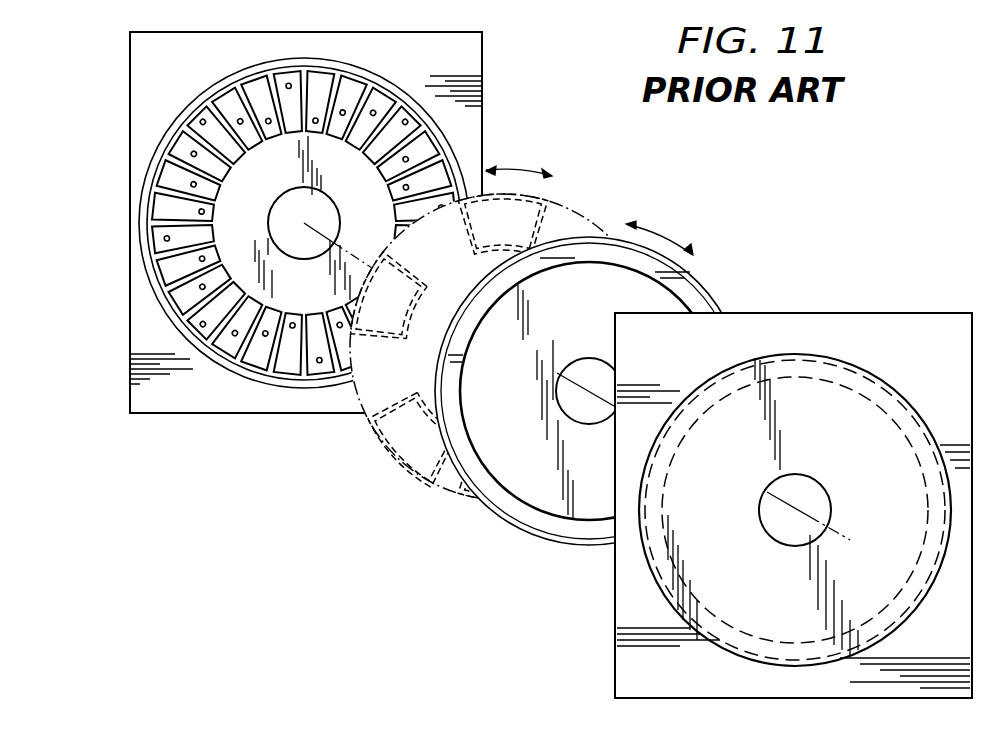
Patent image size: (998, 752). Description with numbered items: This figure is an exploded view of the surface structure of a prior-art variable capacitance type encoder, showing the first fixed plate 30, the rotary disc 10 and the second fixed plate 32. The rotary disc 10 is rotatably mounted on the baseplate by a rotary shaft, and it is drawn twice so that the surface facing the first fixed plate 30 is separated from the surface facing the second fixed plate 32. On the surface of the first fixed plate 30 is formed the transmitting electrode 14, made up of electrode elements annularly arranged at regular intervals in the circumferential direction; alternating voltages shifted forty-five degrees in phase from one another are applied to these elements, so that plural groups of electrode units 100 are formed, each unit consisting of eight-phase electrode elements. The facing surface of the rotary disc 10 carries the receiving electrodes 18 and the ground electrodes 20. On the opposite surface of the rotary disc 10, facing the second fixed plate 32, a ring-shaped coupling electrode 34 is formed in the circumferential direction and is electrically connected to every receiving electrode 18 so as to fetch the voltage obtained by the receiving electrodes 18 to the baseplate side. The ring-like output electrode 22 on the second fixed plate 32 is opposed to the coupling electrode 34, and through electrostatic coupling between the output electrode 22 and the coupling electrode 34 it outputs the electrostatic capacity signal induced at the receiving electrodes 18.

The rotary disc 10 is at (523, 535).
The transmitting electrode 14 is at (205, 215).
The receiving electrodes 18 is at (540, 196).
The ground electrodes 20 is at (422, 252).
The output electrode 22 is at (833, 369).
The first fixed plate 30 is at (163, 415).
The second fixed plate 32 is at (614, 590).
The coupling electrode 34 is at (693, 298).
The electrode units 100 is at (204, 80).